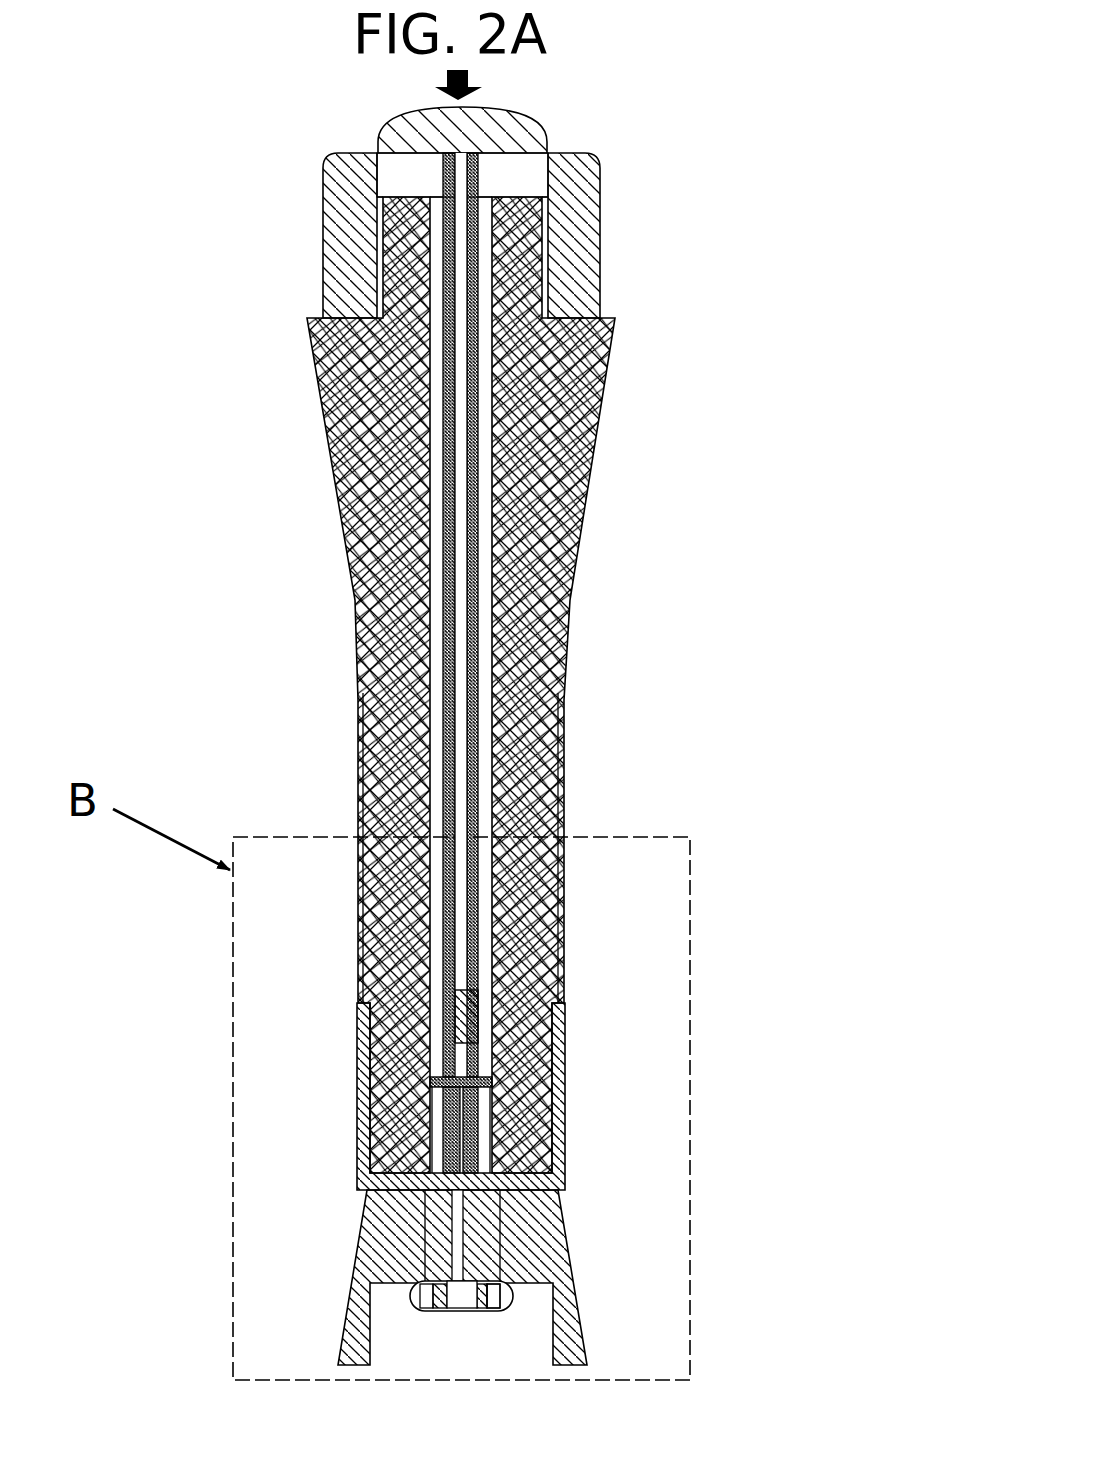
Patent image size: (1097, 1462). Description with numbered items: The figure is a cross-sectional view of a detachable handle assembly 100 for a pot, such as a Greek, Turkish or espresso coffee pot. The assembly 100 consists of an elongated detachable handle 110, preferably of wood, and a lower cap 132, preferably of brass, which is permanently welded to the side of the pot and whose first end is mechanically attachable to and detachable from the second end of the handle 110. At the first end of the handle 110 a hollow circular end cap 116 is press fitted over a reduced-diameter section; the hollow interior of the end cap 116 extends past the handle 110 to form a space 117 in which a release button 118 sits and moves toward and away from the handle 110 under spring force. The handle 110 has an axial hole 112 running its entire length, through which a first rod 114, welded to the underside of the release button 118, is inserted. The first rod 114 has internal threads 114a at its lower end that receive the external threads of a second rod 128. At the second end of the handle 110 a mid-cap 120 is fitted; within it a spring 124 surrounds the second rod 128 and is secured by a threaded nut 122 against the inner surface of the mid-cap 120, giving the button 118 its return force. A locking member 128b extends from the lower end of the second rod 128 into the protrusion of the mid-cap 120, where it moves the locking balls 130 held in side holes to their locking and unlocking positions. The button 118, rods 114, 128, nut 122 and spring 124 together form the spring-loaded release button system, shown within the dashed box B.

The detachable handle assembly 100 is at (143, 245).
The detachable handle 110 is at (596, 431).
The axial hole 112 is at (485, 520).
The first rod 114 is at (478, 672).
The internal threads 114a is at (478, 1002).
The circular end cap 116 is at (598, 231).
The space 117 is at (418, 173).
The release button 118 is at (548, 127).
The mid-cap 120 is at (363, 1070).
The threaded nut 122 is at (490, 1080).
The spring 124 is at (485, 1132).
The second rod 128 is at (463, 1223).
The locking member 128b is at (513, 1297).
The locking ball 130 is at (410, 1297).
The lower cap 132 is at (363, 1233).